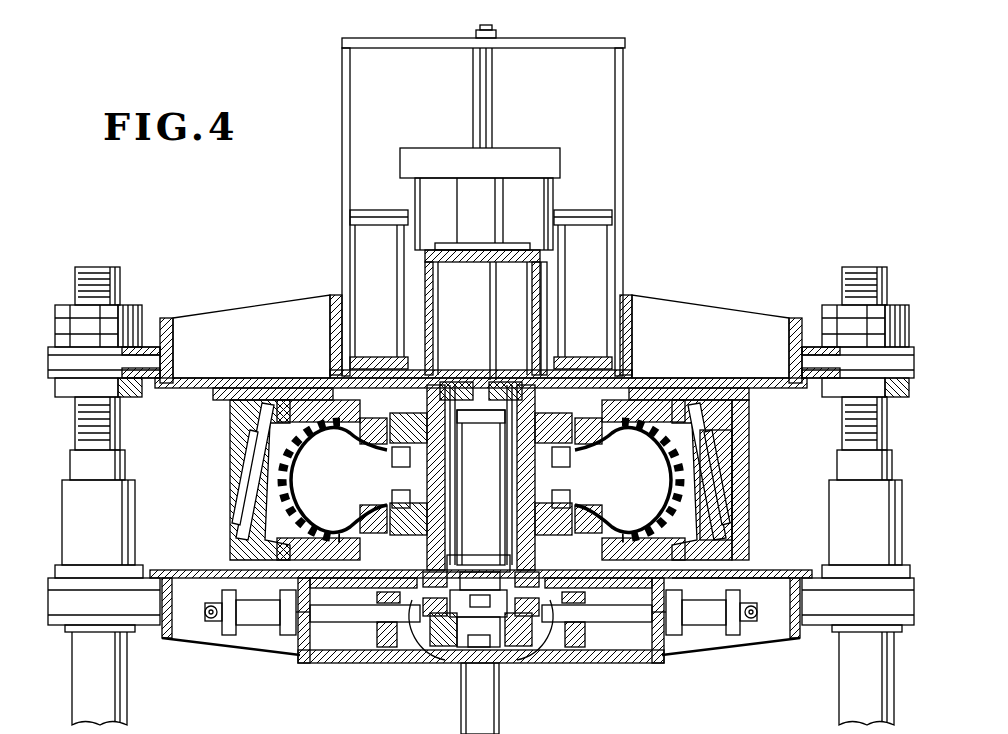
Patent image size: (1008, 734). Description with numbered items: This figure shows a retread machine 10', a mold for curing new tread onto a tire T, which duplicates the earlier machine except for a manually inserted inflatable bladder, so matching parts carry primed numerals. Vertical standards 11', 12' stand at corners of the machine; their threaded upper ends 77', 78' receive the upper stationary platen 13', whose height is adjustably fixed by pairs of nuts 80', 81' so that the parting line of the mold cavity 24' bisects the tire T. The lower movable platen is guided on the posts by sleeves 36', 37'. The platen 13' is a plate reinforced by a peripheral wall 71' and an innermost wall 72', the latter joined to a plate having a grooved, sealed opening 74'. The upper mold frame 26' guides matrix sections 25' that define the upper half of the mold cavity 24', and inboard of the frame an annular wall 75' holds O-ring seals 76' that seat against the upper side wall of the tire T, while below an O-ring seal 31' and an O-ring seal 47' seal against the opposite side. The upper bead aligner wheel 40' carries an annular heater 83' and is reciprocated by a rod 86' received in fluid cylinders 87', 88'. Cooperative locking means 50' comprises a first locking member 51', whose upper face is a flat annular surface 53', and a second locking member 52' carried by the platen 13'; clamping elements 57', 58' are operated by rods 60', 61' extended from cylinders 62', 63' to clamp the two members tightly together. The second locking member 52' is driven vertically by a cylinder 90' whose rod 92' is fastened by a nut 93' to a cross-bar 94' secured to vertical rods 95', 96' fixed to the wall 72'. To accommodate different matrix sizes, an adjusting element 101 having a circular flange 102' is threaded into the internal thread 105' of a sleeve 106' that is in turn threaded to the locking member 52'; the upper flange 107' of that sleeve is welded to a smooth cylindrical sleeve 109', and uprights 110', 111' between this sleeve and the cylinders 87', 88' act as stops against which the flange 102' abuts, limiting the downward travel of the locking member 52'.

The retread machine 10' is at (481, 261).
The vertical standard 11' is at (81, 678).
The vertical standard 12' is at (890, 678).
The upper stationary support or platen 13' is at (710, 316).
The mold cavity 24' is at (319, 480).
The matrix sections 25' is at (751, 483).
The mold frame 26' is at (769, 478).
The O-ring seal 31' is at (365, 618).
The sleeve 36' is at (119, 522).
The sleeve 37' is at (884, 522).
The bead aligner wheel 40' is at (623, 480).
The O-ring seal 47' is at (478, 549).
The cooperative locking means 50' is at (376, 670).
The first locking member 51' is at (534, 656).
The second locking member 52' is at (456, 669).
The flat annular surface 53' is at (517, 698).
The clamping element 57' is at (324, 640).
The clamping element 58' is at (627, 636).
The piston rod 60' is at (273, 642).
The piston rod 61' is at (701, 633).
The cylinder 62' is at (206, 635).
The cylinder 63' is at (738, 583).
The peripheral wall 71' is at (807, 322).
The innermost wall 72' is at (647, 310).
The opening 74' is at (583, 298).
The annular wall 75' is at (659, 368).
The O-ring seals 76' is at (647, 395).
The threaded upper end 77' is at (128, 430).
The threaded upper end 78' is at (893, 439).
The nut 80' is at (531, 302).
The nut 81' is at (493, 372).
The annular heater 83' is at (630, 480).
The rod 86' is at (685, 357).
The fluid cylinder 87' is at (251, 339).
The fluid cylinder 88' is at (619, 223).
The cylinder 90' is at (481, 487).
The rod 92' is at (502, 216).
The nut 93' is at (460, 19).
The cross-bar 94' is at (483, 62).
The vertical rod 95' is at (374, 212).
The vertical rod 96' is at (647, 212).
The adjusting element 101 is at (482, 220).
The circular flange 102' is at (508, 142).
The internal thread 105' is at (509, 359).
The sleeve 106' is at (516, 479).
The upper flange 107' is at (482, 312).
The cylindrical sleeve 109' is at (577, 318).
The upright 110' is at (454, 212).
The upright 111' is at (583, 198).
The tire T is at (288, 440).